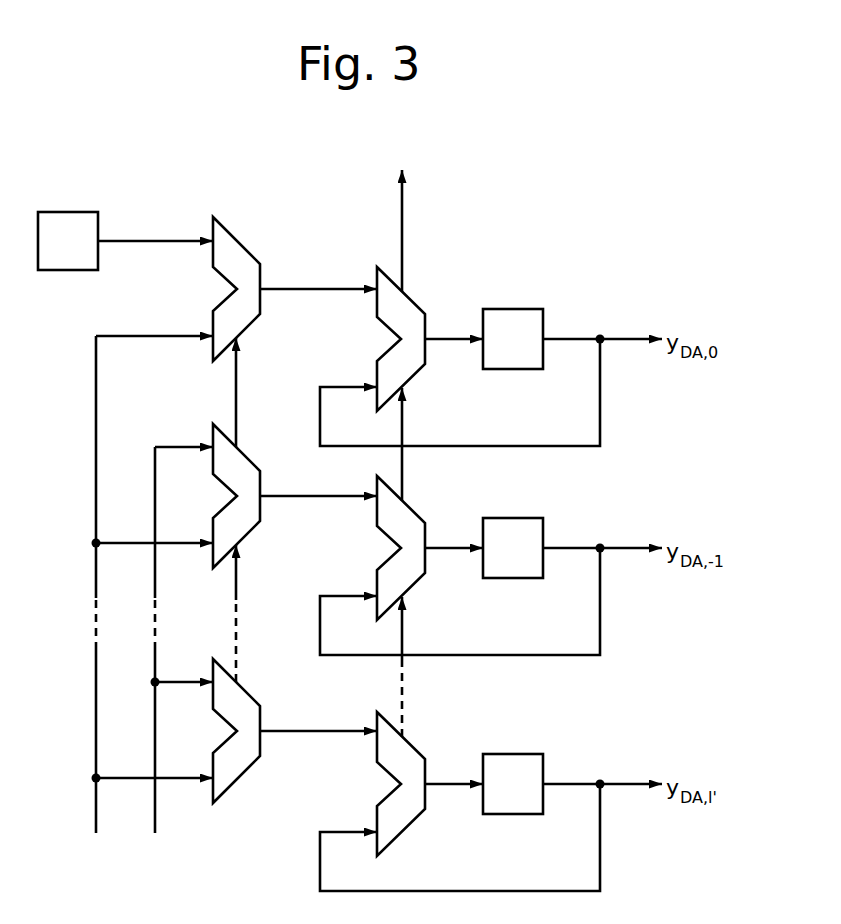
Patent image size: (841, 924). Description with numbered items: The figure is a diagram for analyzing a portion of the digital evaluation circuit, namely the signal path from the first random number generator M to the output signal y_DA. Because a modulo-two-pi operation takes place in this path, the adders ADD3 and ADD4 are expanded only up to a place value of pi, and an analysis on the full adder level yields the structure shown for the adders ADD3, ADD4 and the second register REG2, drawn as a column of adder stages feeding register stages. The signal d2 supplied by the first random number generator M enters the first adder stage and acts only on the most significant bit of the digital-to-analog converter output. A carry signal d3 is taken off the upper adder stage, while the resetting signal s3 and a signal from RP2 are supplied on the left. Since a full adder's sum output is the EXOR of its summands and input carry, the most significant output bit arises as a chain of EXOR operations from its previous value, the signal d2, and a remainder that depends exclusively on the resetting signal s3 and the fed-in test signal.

The adder ADD3 is at (230, 240).
The adder ADD4 is at (410, 313).
The second register REG2 is at (523, 324).
The first random number generator M is at (68, 241).
The signal supplied by the first random number generator d2 is at (155, 258).
The output data signal d3 is at (405, 210).
The resetting signal s3 is at (93, 607).
The signal from RP2 is at (157, 678).